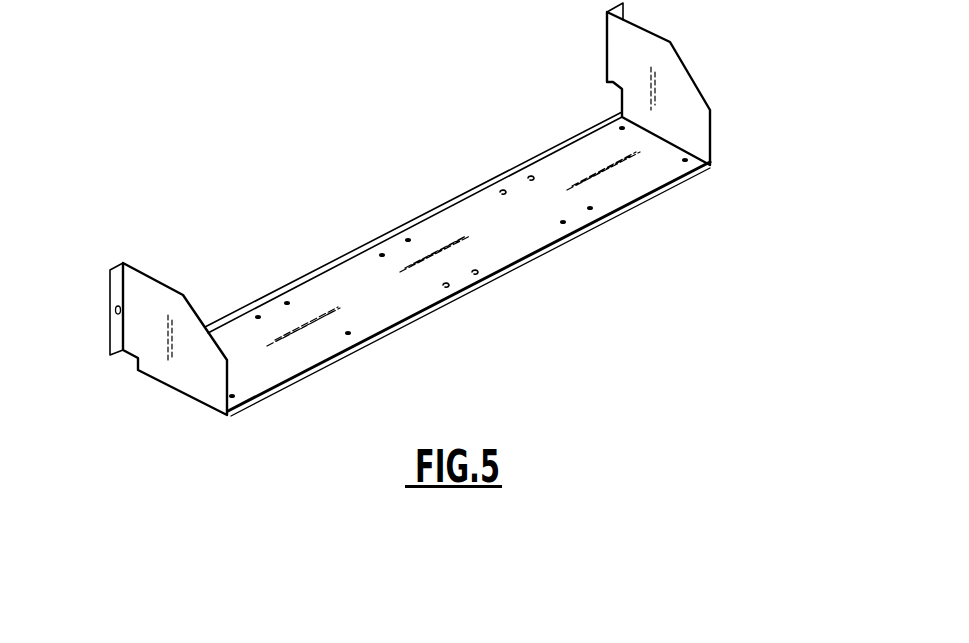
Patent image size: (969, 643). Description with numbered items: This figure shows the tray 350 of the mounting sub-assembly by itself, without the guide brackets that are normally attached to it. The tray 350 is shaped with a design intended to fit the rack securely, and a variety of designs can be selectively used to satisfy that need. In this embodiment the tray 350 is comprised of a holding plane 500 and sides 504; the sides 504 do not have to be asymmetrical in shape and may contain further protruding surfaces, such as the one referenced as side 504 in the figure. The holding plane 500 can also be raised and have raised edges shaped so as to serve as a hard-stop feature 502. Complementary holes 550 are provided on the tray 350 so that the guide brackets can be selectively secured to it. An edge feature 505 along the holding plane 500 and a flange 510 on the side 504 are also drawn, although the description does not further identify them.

The shelf 350 is at (558, 203).
The tray 500 is at (320, 347).
The floor 502 is at (262, 310).
The end plate 504 is at (177, 364).
The rear wall 505 is at (446, 205).
The mounting flange 510 is at (110, 322).
The apertures 550 is at (528, 179).